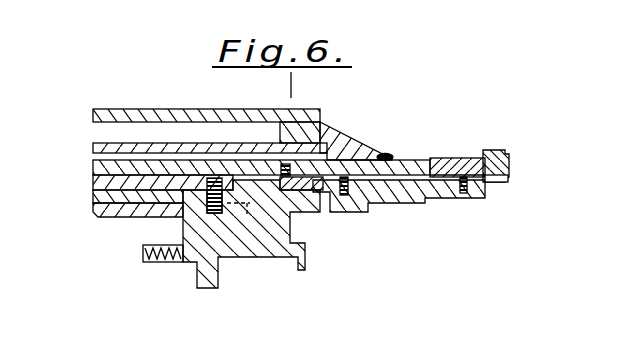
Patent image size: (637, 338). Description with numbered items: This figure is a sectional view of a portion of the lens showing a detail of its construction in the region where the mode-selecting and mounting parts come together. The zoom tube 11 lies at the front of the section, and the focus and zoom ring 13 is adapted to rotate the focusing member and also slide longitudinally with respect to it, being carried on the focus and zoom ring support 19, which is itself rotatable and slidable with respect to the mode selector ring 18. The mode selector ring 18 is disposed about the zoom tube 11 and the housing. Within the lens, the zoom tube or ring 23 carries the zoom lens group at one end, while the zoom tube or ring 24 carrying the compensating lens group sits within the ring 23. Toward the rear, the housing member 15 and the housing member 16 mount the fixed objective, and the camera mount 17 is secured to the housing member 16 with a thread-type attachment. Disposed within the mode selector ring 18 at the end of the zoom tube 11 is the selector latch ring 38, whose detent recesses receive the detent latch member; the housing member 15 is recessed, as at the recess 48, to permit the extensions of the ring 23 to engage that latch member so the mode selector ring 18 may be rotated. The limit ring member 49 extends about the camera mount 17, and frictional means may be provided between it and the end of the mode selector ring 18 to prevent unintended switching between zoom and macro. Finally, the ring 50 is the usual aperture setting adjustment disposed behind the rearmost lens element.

The zoom tube 11 is at (160, 181).
The focus and zoom ring 13 is at (183, 118).
The housing member 15 is at (260, 240).
The housing member 16 is at (413, 193).
The camera mount 17 is at (497, 182).
The mode selector ring 18 is at (378, 156).
The focus and zoom ring support 19 is at (138, 143).
The zoom tube or ring 23 is at (108, 194).
The zoom tube or ring 24 is at (108, 210).
The selector latch ring 38 is at (305, 183).
The recess 48 is at (247, 206).
The limit ring member 49 is at (453, 158).
The aperture setting adjustment ring 50 is at (495, 163).